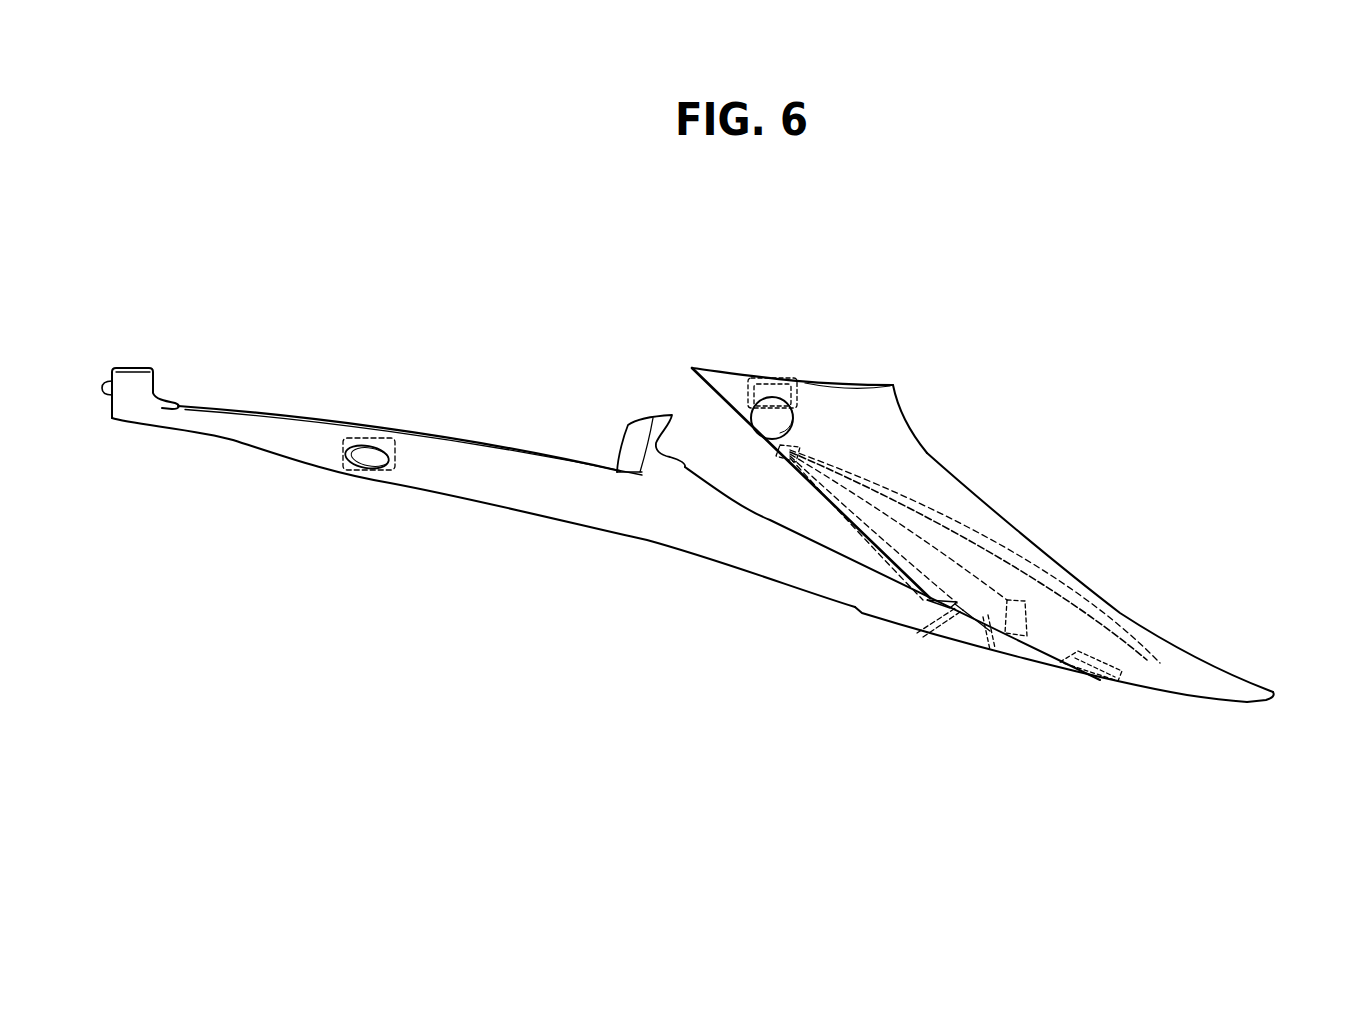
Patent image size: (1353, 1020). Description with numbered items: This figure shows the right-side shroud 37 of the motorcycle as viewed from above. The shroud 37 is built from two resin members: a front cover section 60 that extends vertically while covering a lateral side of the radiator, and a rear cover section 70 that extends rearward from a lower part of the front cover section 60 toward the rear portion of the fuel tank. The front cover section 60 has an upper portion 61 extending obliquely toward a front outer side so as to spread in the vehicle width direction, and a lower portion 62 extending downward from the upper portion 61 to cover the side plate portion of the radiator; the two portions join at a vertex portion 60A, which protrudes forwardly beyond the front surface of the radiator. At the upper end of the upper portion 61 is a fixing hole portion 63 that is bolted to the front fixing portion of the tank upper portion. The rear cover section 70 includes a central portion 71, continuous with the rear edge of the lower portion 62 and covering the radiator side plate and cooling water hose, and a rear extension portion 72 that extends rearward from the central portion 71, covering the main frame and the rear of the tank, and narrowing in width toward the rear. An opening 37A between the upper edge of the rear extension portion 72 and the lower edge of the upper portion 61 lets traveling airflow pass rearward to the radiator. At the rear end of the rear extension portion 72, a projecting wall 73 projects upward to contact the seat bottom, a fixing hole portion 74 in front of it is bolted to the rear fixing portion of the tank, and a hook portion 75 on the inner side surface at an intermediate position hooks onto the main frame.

The shroud 37 is at (950, 326).
The opening 37A is at (765, 493).
The front cover section 60 is at (1096, 589).
The vertex portion 60A is at (1260, 700).
The upper portion 61 is at (927, 468).
The lower portion 62 is at (1132, 685).
The fixing hole portion 63 is at (775, 412).
The rear cover section 70 is at (505, 440).
The central portion 71 is at (888, 613).
The rear extension portion 72 is at (527, 500).
The projecting wall 73 is at (136, 367).
The fixing hole portion 74 is at (370, 462).
The hook portion 75 is at (643, 430).